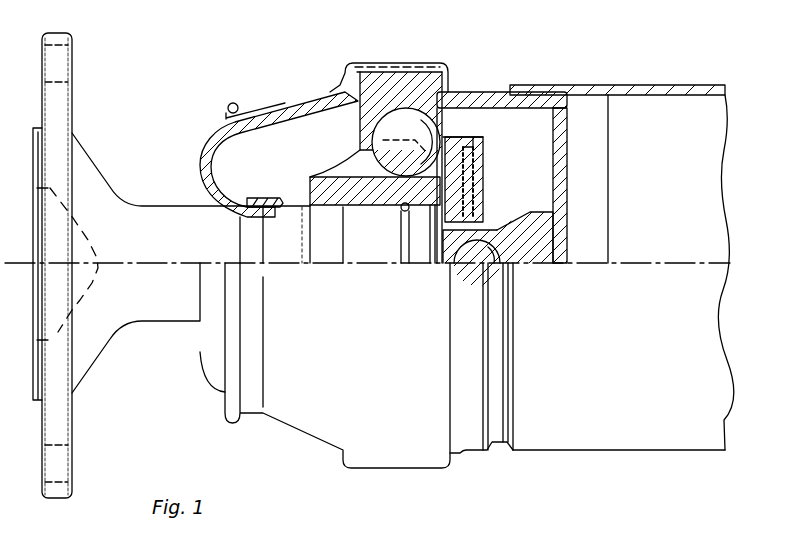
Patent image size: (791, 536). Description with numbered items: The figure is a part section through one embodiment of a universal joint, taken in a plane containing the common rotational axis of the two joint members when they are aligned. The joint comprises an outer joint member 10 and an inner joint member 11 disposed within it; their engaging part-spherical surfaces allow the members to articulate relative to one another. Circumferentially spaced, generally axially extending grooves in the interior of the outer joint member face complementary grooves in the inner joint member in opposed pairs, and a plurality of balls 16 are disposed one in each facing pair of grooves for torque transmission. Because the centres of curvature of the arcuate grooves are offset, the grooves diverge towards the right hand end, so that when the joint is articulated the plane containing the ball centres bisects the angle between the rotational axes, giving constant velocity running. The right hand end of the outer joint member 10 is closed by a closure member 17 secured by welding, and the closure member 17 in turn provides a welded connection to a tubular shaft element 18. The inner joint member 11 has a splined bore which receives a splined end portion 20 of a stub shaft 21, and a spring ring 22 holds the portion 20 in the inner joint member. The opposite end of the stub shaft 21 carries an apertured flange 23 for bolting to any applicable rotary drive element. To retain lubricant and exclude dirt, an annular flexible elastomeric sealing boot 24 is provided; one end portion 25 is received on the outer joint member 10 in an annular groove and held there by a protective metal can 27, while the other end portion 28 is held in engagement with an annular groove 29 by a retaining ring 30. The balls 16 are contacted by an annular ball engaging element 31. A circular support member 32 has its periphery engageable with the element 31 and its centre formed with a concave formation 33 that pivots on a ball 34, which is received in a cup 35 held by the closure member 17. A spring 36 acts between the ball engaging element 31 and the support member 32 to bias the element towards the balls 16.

The outer joint member 10 is at (435, 70).
The inner joint member 11 is at (369, 195).
The balls 16 is at (383, 131).
The closure member 17 is at (563, 165).
The tubular shaft element 18 is at (692, 84).
The splined end portion 20 is at (335, 257).
The stub shaft 21 is at (165, 302).
The spring ring 22 is at (400, 216).
The apertured flange 23 is at (60, 66).
The sealing boot 24 is at (207, 152).
The end portion of boot 25 is at (397, 63).
The protective metal can 27 is at (250, 110).
The other end portion of boot 28 is at (248, 221).
The annular groove 29 is at (268, 239).
The retaining ring 30 is at (263, 197).
The ball engaging element 31 is at (500, 92).
The support member 32 is at (480, 183).
The concave formation 33 is at (447, 260).
The ball 34 is at (476, 268).
The cup 35 is at (527, 265).
The spring 36 is at (483, 160).